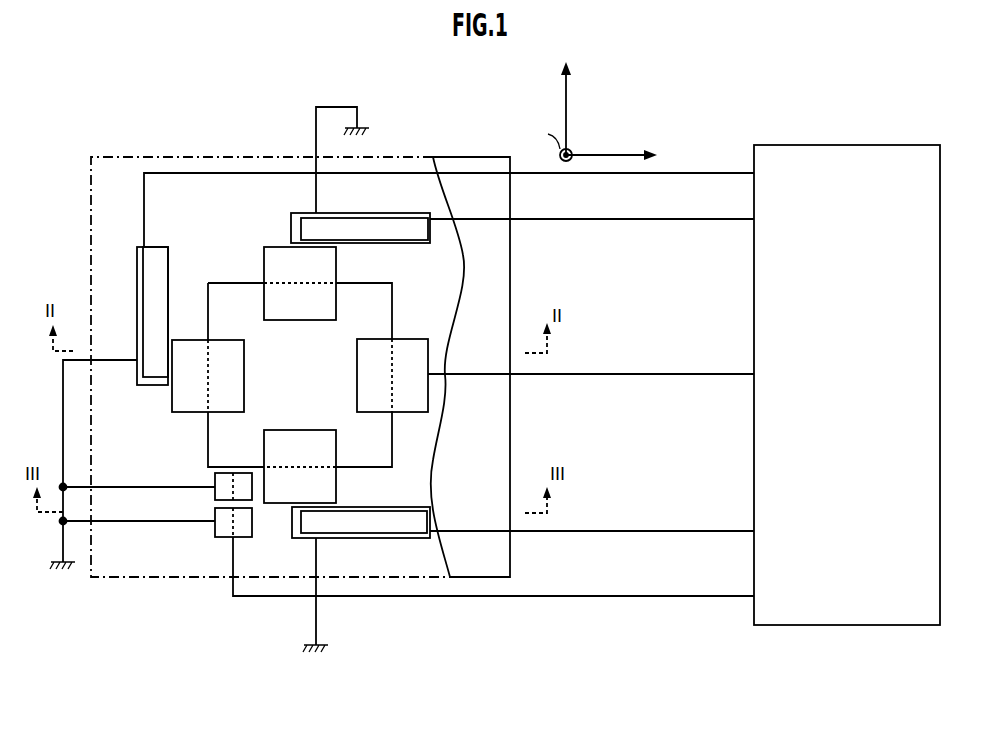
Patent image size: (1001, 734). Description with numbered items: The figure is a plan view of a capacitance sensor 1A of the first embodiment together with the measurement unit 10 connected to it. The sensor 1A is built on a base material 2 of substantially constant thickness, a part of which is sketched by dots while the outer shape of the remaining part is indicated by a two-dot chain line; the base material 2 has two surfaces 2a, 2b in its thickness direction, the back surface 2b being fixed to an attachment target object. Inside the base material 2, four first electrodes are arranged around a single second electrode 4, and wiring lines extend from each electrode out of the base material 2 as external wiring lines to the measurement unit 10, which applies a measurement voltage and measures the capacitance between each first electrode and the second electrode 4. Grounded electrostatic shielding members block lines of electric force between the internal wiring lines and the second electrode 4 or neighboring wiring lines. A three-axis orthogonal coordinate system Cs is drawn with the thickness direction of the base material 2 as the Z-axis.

The capacitance sensor 1A is at (190, 73).
The base material 2 is at (512, 283).
The surface of base material 2a is at (493, 237).
The back surface of base material 2b is at (490, 550).
The second electrode 4 is at (355, 292).
The measurement unit 10 is at (785, 145).
The three-axis orthogonal coordinate system Cs is at (599, 109).